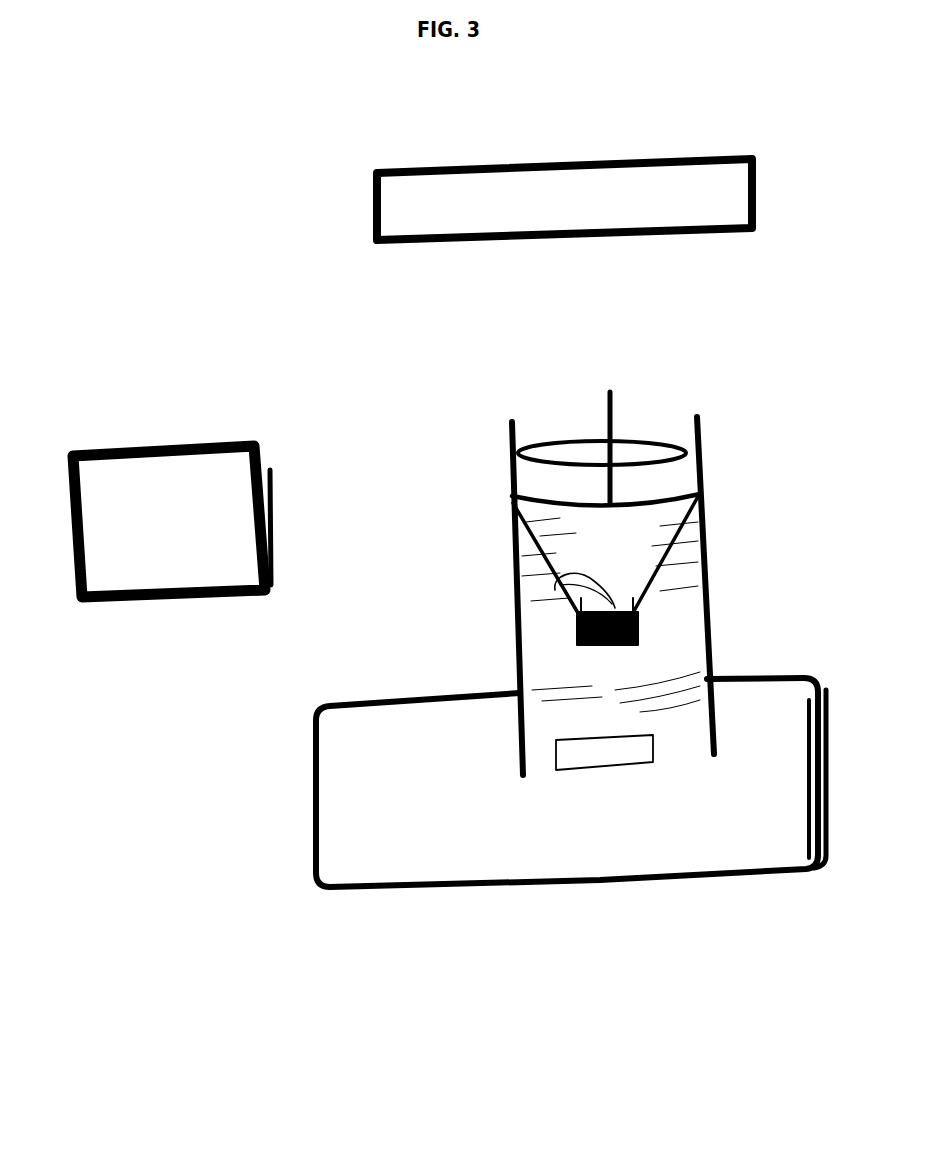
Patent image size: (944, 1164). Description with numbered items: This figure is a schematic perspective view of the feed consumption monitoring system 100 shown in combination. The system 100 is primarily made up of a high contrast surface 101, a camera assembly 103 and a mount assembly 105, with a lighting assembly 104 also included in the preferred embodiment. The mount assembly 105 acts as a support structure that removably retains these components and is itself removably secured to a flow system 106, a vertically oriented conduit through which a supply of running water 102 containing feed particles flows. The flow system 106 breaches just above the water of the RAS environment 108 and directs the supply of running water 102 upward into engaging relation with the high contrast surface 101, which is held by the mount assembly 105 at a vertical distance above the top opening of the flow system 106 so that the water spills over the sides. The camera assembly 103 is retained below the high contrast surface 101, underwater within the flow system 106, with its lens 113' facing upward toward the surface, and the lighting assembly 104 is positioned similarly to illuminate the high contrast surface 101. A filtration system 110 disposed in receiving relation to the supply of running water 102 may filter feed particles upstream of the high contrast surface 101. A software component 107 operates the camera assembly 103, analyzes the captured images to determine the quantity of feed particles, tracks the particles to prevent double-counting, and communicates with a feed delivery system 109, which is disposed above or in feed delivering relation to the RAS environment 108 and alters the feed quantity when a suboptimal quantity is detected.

The feed consumption monitoring system 100 is at (104, 300).
The high contrast surface 101 is at (647, 440).
The supply of running water 102 is at (610, 830).
The camera assembly 103 is at (560, 632).
The lighting assembly 104 is at (707, 558).
The mount assembly 105 is at (700, 447).
The flow system 106 is at (705, 587).
The software component 107 is at (173, 485).
The RAS environment 108 is at (481, 844).
The feed delivery system 109 is at (672, 190).
The filtration system 110 is at (638, 748).
The conduit 113' is at (469, 604).